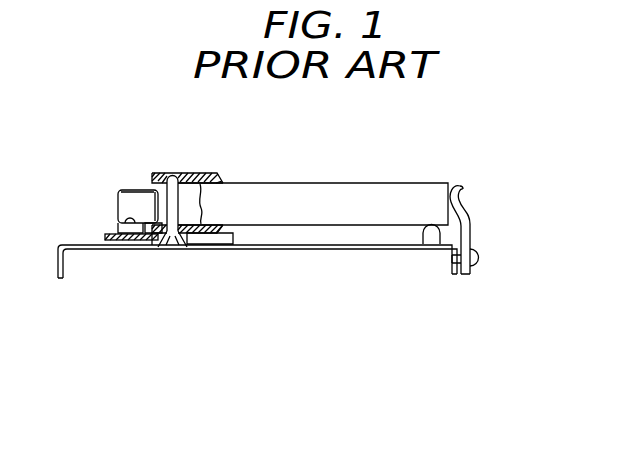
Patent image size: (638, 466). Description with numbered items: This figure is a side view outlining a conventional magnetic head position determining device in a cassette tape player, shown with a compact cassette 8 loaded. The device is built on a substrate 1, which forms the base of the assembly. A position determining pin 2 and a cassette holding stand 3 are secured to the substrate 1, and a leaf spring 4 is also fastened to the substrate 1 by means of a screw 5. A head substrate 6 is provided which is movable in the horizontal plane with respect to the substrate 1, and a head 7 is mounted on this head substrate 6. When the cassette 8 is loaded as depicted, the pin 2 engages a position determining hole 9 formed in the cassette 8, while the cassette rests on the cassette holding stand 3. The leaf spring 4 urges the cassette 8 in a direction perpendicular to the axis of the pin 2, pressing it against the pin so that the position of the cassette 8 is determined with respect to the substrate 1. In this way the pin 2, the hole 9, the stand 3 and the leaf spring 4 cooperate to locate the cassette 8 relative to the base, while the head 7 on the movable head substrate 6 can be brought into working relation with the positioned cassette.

The substrate 1 is at (300, 252).
The position determining pin 2 is at (177, 242).
The cassette holding stand 3 is at (432, 241).
The leaf spring 4 is at (468, 212).
The screw 5 is at (477, 260).
The head substrate 6 is at (120, 242).
The head 7 is at (122, 203).
The compact cassette 8 is at (346, 185).
The position determining hole 9 is at (168, 176).